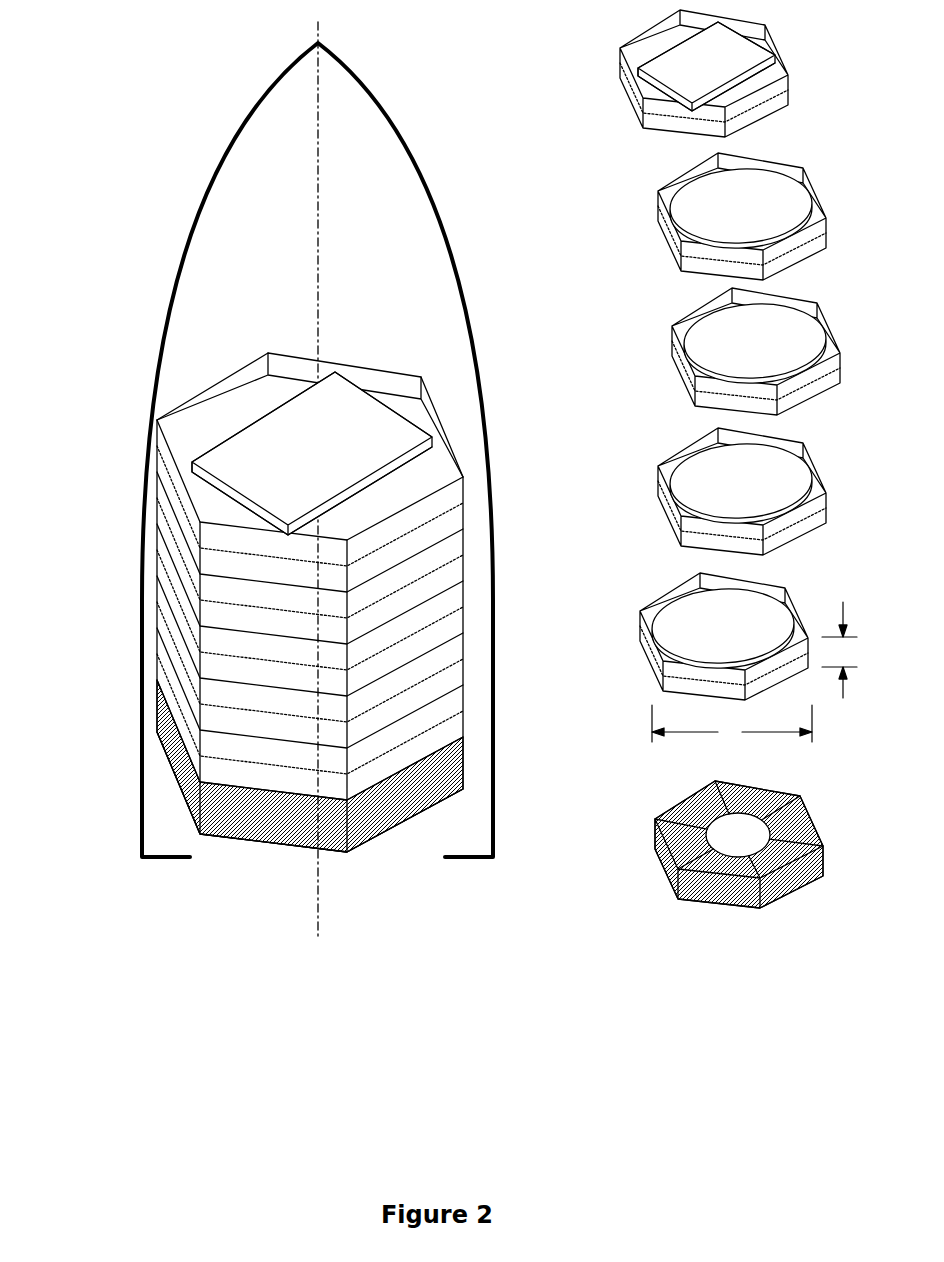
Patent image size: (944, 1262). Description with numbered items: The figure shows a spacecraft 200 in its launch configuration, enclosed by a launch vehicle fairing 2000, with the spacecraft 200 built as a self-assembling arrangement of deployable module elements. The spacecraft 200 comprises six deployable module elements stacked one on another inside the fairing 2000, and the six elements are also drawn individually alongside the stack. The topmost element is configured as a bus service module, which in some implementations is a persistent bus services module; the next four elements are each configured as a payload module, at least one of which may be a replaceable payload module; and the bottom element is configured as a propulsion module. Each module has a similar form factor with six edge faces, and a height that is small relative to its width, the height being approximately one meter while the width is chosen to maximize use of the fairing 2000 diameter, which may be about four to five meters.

The launch vehicle fairing 2000 is at (417, 121).
The spacecraft 200 is at (122, 423).